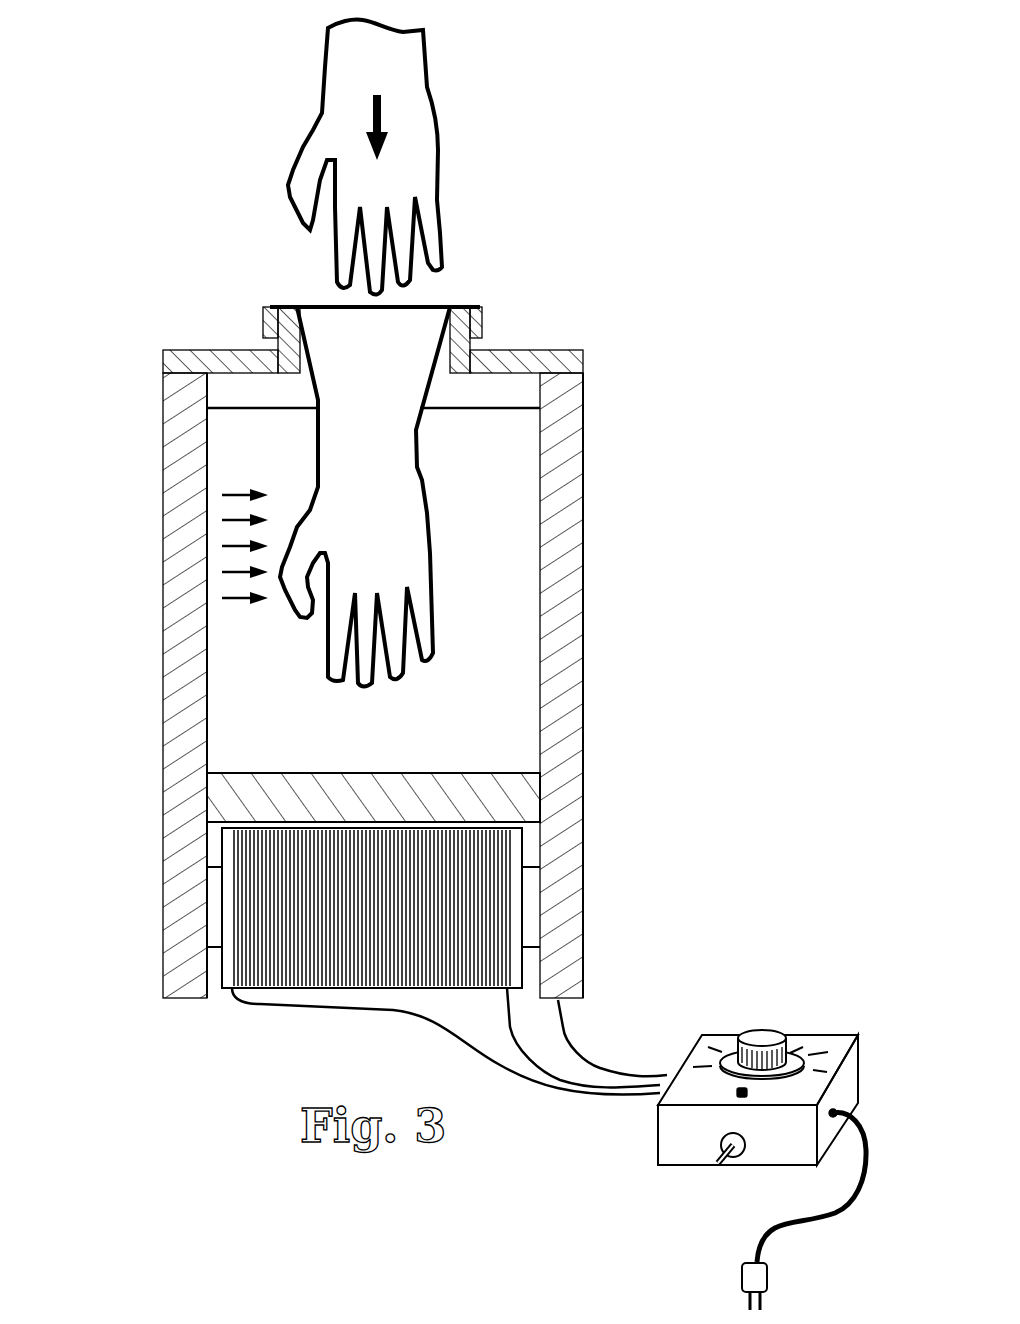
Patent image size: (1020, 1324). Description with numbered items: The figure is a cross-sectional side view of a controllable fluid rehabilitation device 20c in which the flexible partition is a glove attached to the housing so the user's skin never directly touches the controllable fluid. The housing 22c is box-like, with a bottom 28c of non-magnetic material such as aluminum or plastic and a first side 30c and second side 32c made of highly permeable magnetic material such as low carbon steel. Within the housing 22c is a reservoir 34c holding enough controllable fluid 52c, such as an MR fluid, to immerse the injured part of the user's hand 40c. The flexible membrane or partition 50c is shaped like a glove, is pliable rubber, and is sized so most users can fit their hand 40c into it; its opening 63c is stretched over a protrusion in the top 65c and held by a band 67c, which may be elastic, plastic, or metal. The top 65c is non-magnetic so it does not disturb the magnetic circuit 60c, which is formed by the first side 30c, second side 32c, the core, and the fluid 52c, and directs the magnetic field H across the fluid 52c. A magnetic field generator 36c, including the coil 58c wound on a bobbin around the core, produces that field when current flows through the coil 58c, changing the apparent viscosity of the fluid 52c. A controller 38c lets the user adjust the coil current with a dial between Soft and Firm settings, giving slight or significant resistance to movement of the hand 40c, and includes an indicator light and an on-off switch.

The controllable fluid rehabilitation device 20c is at (361, 607).
The housing 22c is at (361, 607).
The bottom 28c is at (392, 811).
The first side 30c is at (163, 493).
The second side 32c is at (583, 488).
The reservoir 34c is at (207, 665).
The magnetic field generator 36c is at (268, 999).
The controller 38c is at (770, 1022).
The hand 40c is at (400, 66).
The flexible membrane or partition 50c is at (322, 377).
The controllable fluid 52c is at (509, 671).
The coil 58c is at (392, 922).
The magnetic circuit 60c is at (590, 640).
The opening 63c is at (440, 303).
The top 65c is at (190, 350).
The band 67c is at (263, 307).